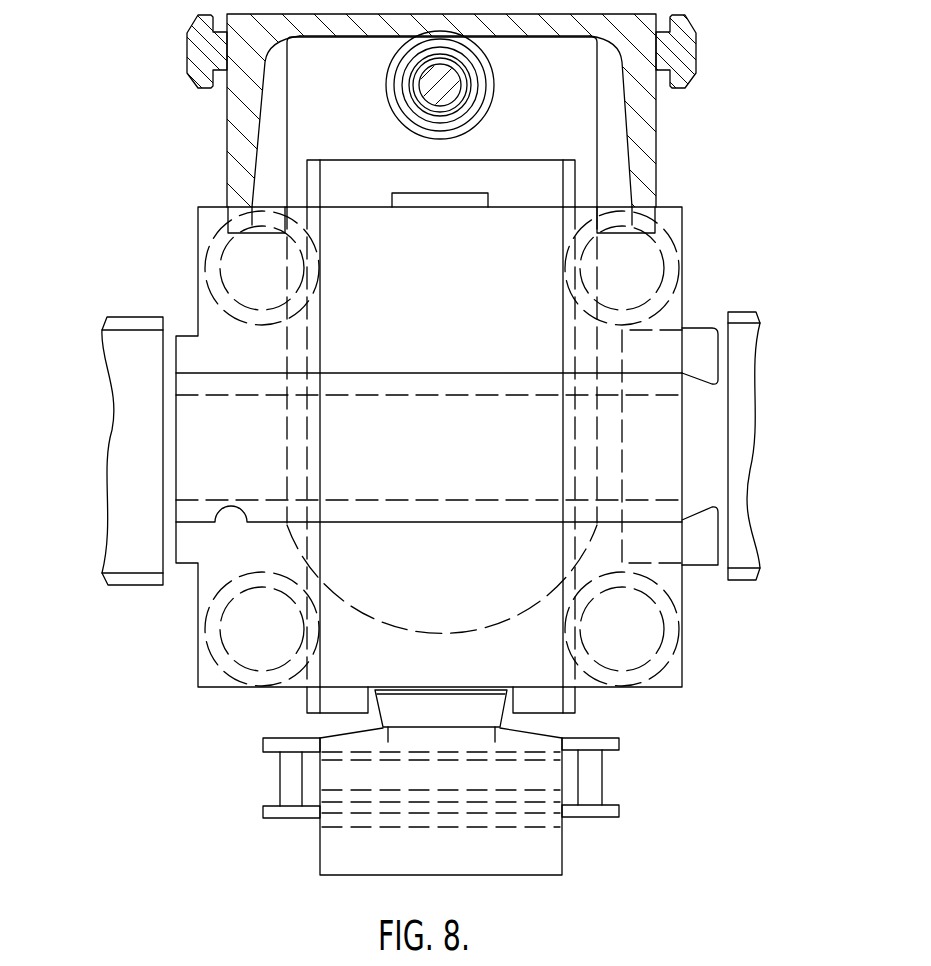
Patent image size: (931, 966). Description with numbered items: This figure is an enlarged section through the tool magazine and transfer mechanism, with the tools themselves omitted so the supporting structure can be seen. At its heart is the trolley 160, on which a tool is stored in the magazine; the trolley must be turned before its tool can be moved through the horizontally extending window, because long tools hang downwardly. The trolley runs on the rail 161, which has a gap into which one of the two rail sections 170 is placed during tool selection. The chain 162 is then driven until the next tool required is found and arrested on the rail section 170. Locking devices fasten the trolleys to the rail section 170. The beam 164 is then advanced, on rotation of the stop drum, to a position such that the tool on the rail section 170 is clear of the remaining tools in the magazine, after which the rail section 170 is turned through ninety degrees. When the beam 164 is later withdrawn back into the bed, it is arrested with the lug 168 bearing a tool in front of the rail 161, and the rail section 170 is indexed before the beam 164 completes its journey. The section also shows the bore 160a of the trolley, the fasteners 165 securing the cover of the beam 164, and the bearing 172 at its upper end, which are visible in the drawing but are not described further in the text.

The trolley 160 is at (668, 631).
The bore in valve body 160a is at (630, 378).
The rail 161 is at (131, 548).
The chain 162 is at (587, 740).
The beam 164 is at (643, 124).
The screws 165 is at (198, 63).
The lug 168 is at (317, 95).
The rail section 170 is at (354, 172).
The bearing 172 is at (463, 89).